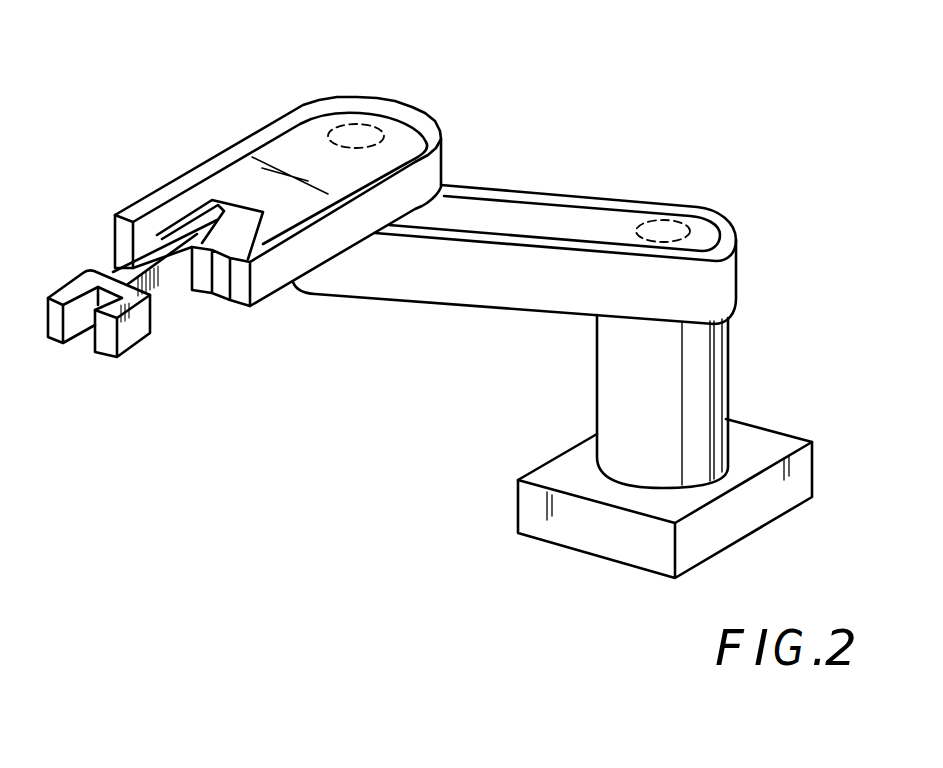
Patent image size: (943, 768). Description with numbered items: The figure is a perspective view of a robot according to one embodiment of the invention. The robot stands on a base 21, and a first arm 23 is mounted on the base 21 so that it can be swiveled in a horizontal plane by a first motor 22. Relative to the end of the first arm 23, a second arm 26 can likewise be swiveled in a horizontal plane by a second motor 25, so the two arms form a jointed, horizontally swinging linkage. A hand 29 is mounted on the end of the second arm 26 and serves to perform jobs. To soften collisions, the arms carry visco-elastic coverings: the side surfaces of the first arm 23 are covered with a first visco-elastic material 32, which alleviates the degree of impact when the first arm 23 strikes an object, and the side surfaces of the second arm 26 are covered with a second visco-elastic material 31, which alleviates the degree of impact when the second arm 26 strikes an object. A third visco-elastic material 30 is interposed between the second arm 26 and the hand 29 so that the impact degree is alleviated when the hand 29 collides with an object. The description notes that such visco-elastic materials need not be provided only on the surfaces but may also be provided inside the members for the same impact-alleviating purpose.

The base 21 is at (753, 460).
The first motor 22 is at (697, 238).
The first arm 23 is at (558, 218).
The second motor 25 is at (365, 137).
The second arm 26 is at (297, 157).
The hand 29 is at (78, 317).
The third visco-elastic material 30 is at (217, 232).
The second visco-elastic material 31 is at (270, 275).
The first visco-elastic material 32 is at (472, 293).